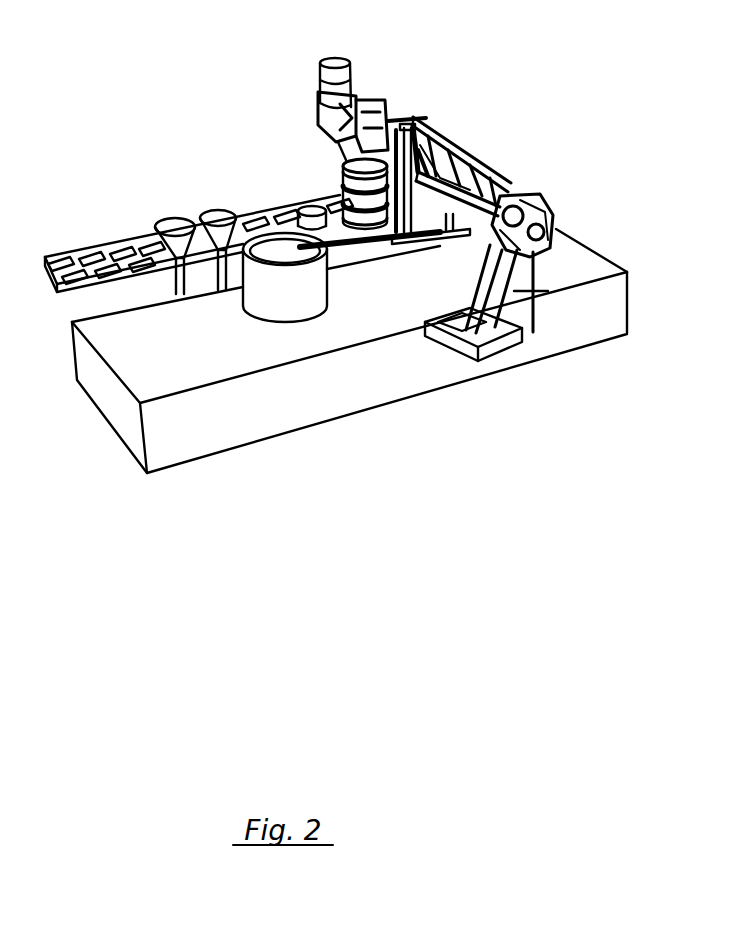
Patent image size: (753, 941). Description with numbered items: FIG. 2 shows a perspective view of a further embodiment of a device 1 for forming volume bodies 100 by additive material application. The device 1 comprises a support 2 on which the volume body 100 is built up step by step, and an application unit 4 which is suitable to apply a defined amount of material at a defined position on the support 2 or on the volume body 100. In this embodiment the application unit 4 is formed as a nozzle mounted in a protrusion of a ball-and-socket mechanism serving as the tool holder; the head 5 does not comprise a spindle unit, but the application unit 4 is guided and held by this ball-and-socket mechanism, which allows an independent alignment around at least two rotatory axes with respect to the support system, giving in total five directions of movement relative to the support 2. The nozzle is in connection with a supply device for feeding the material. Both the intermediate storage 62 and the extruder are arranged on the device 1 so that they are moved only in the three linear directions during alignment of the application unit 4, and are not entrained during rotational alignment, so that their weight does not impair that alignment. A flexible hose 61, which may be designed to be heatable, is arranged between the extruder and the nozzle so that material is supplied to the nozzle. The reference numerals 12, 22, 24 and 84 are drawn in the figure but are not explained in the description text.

The device 1 is at (470, 203).
The support 2 is at (567, 330).
The application unit 4 is at (316, 209).
The head 5 is at (340, 180).
The arm joint 12 is at (520, 192).
The robot base 22 is at (517, 290).
The post 24 is at (412, 126).
The flexible hose 61 is at (381, 108).
The intermediate storage 62 is at (322, 80).
The robot arm 84 is at (497, 160).
The volume body 100 is at (290, 304).